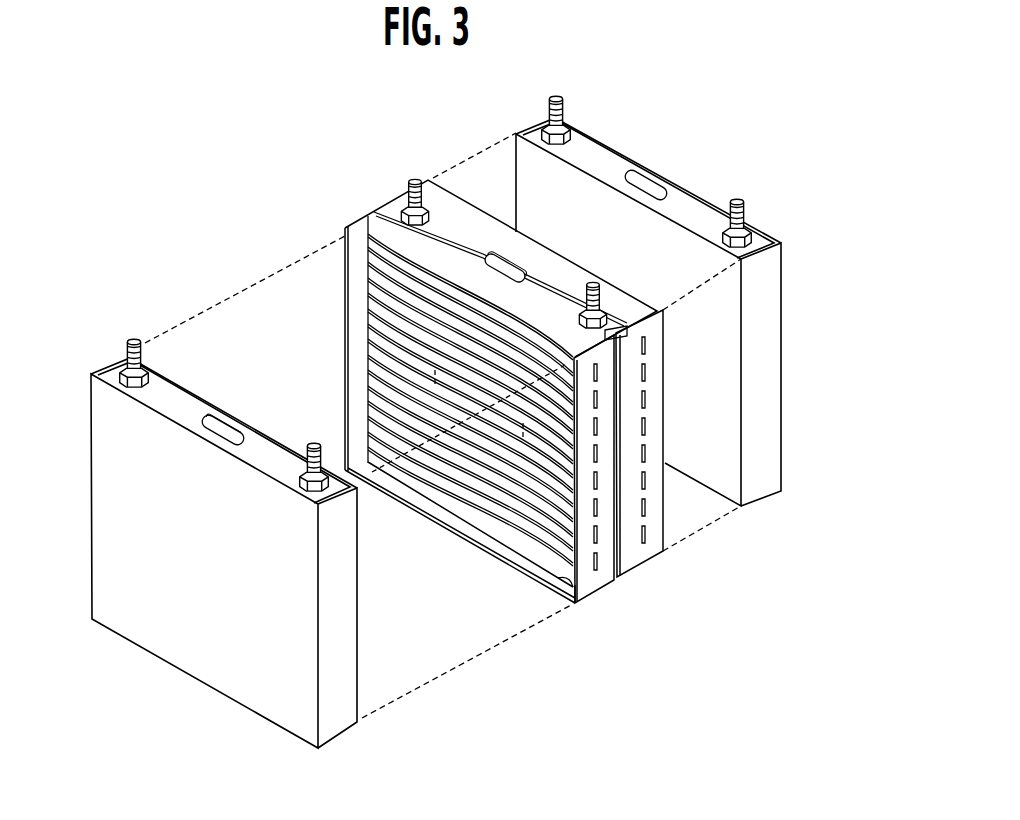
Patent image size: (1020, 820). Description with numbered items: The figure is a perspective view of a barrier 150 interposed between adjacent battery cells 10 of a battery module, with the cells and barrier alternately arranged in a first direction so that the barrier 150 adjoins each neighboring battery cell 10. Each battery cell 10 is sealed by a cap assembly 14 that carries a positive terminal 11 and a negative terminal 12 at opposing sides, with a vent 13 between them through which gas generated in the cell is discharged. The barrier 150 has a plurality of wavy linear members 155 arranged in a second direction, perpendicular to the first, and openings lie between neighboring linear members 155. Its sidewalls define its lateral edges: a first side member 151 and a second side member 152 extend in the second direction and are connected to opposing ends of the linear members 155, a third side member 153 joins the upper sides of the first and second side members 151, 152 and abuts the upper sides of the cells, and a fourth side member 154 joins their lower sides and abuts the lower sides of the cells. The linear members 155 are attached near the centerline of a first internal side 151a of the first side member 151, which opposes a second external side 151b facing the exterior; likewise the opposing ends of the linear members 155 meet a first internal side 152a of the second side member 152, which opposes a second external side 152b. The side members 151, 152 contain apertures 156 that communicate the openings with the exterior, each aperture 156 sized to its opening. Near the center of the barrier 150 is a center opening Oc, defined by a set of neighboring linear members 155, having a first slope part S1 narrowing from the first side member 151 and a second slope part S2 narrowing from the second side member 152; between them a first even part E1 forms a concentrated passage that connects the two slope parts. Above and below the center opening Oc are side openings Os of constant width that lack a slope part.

The battery cell 10 is at (342, 702).
The positive terminal 11 is at (412, 180).
The negative terminal 12 is at (592, 282).
The vent 13 is at (508, 275).
The cap assembly 14 is at (450, 237).
The barrier 150 is at (501, 469).
The first side member 151 is at (290, 343).
The first internal side 151a is at (343, 339).
The second external side 151b is at (338, 370).
The second side member 152 is at (654, 516).
The first internal side 152a is at (558, 556).
The second external side 152b is at (566, 558).
The third side member 153 is at (396, 233).
The fourth side member 154 is at (418, 513).
The linear member 155 is at (396, 304).
The aperture 156 is at (597, 472).
The first slope part S1 is at (437, 552).
The second slope part S2 is at (488, 476).
The first even part E1 is at (468, 418).
The center opening Oc is at (530, 445).
The side opening Os is at (560, 455).